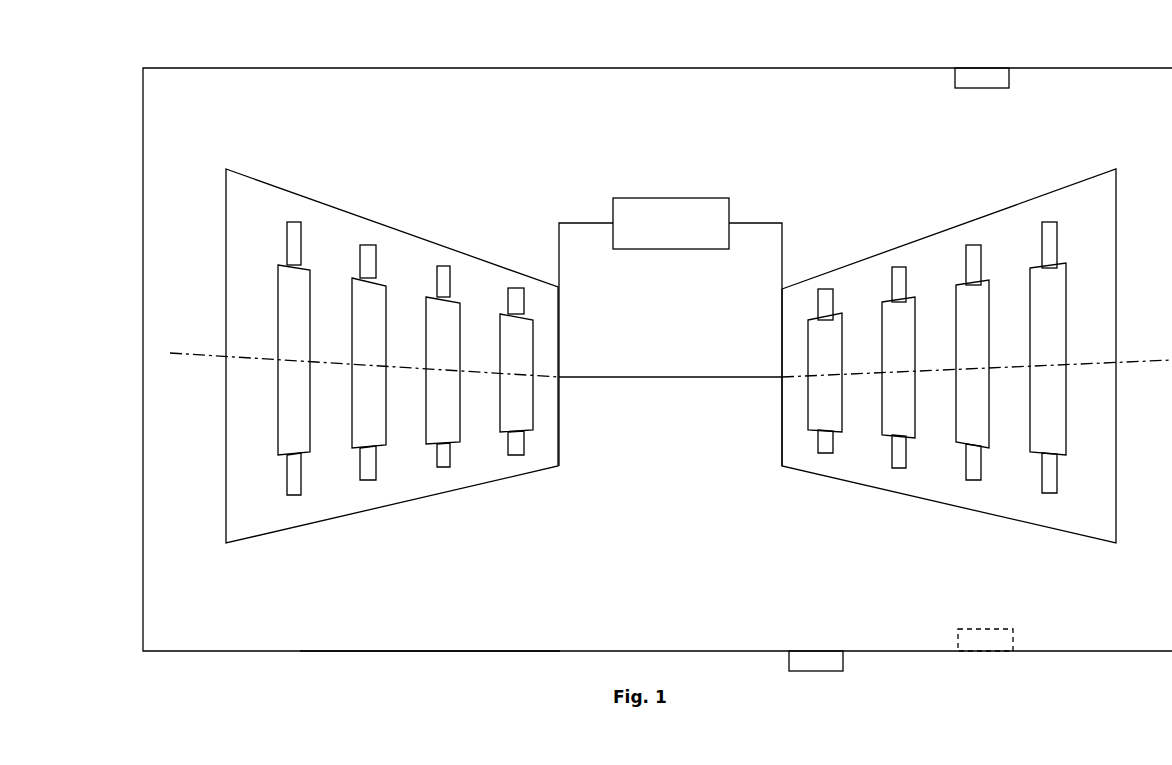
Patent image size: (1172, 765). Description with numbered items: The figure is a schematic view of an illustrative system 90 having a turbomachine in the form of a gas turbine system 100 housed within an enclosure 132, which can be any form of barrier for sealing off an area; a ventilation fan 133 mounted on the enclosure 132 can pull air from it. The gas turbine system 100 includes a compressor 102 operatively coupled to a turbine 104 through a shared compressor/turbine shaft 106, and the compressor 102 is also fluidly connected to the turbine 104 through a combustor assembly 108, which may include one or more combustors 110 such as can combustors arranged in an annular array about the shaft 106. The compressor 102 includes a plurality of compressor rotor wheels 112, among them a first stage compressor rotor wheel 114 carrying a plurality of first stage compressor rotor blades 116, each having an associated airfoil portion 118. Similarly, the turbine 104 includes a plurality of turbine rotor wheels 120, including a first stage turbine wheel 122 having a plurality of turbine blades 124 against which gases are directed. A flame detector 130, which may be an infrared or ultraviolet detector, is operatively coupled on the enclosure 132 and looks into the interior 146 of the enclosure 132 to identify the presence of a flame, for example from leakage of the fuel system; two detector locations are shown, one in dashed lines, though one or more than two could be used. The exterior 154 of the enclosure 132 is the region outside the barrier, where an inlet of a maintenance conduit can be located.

The system 90 is at (294, 63).
The gas turbine system 100 is at (670, 353).
The compressor 102 is at (262, 546).
The turbine 104 is at (1030, 536).
The compressor/turbine shaft 106 is at (633, 379).
The combustor assembly 108 is at (620, 179).
The combustor 110 is at (670, 198).
The compressor rotor wheels 112 is at (342, 495).
The first stage compressor rotor wheel 114 is at (288, 432).
The first stage compressor rotor blades 116 is at (277, 492).
The airfoil portion 118 is at (294, 489).
The turbine rotor wheels 120 is at (1069, 481).
The first stage turbine wheel 122 is at (836, 436).
The turbine blades 124 is at (827, 288).
The flame detector 130 is at (812, 672).
The enclosure 132 is at (432, 652).
The ventilation fan 133 is at (977, 78).
The interior 146 is at (669, 511).
The exterior 154 is at (955, 714).